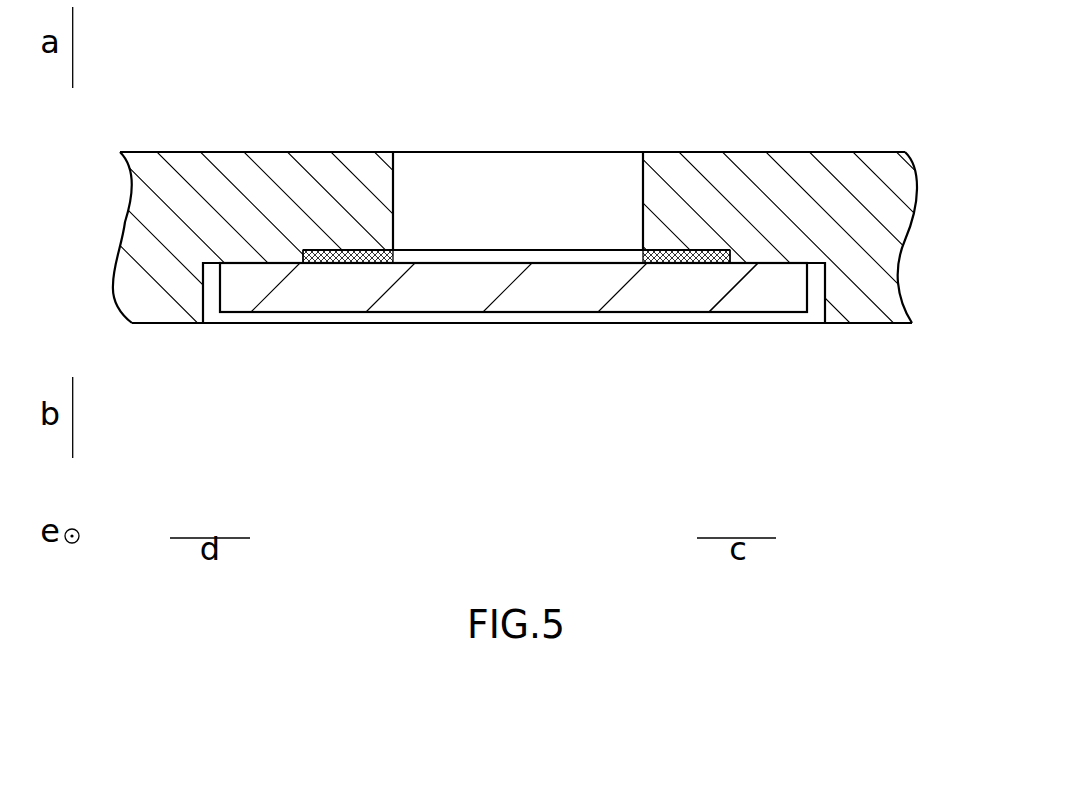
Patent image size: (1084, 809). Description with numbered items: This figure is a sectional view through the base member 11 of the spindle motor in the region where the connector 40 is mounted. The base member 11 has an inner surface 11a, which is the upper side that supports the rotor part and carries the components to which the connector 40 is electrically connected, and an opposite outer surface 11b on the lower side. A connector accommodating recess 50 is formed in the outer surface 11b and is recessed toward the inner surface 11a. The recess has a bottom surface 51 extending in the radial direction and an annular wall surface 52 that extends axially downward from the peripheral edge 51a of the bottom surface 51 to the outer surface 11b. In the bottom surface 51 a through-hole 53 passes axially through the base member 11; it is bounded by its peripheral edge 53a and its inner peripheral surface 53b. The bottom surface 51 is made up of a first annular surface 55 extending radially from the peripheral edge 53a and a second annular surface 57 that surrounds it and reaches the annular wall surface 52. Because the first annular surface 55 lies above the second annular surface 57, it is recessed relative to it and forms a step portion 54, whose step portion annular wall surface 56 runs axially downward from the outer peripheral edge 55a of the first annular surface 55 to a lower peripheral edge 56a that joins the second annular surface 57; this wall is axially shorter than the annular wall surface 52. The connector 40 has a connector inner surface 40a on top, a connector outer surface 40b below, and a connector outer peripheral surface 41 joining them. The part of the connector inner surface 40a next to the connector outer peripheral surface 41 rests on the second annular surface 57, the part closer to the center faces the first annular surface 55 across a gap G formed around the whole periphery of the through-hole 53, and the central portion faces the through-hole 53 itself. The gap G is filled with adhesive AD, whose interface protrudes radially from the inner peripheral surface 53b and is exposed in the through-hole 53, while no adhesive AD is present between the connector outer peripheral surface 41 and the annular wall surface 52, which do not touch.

The base member 11 is at (908, 334).
The inner surface 11a is at (872, 152).
The outer surface 11b is at (870, 323).
The connector 40 is at (455, 324).
The connector inner surface 40a is at (585, 261).
The connector outer surface 40b is at (558, 313).
The connector outer peripheral surface 41 is at (218, 296).
The connector accommodating recess 50 is at (718, 321).
The bottom surface 51 is at (765, 279).
The peripheral edge 51a is at (202, 263).
The annular wall surface 52 is at (211, 294).
The through-hole 53 is at (498, 212).
The peripheral edge of the through-hole 53a is at (392, 249).
The inner peripheral surface 53b is at (393, 203).
The step portion 54 is at (355, 266).
The first annular surface 55 is at (340, 250).
The outer peripheral edge 55a is at (303, 250).
The step portion annular wall surface 56 is at (318, 248).
The lower peripheral edge 56a is at (732, 257).
The second annular surface 57 is at (277, 264).
The gap G is at (699, 248).
The adhesive AD is at (683, 265).